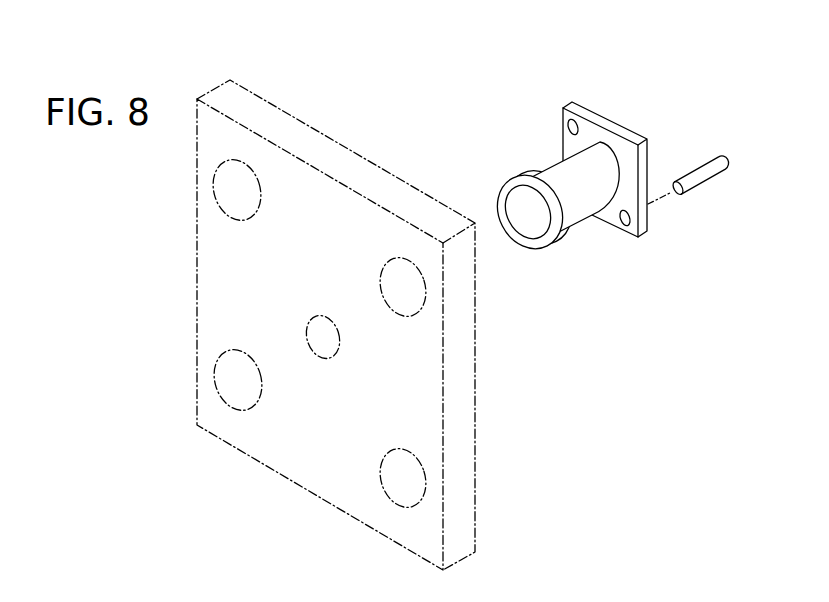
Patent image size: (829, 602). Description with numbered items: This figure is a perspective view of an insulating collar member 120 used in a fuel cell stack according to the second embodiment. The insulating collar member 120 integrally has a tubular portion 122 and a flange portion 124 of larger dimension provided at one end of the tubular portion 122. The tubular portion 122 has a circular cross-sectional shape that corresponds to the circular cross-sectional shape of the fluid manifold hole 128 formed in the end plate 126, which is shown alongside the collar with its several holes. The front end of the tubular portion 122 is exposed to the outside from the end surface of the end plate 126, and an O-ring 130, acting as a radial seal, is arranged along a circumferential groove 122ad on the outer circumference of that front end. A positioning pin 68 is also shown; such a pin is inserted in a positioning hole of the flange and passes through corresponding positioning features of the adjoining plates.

The positioning pin 68 is at (713, 172).
The insulating collar member 120 is at (527, 169).
The tubular portion 122 is at (513, 211).
The circumferential groove 122ad is at (483, 199).
The flange portion 124 is at (623, 148).
The end plate 126 is at (302, 310).
The fluid manifold hole 128 is at (402, 307).
The O-ring 130 is at (563, 190).